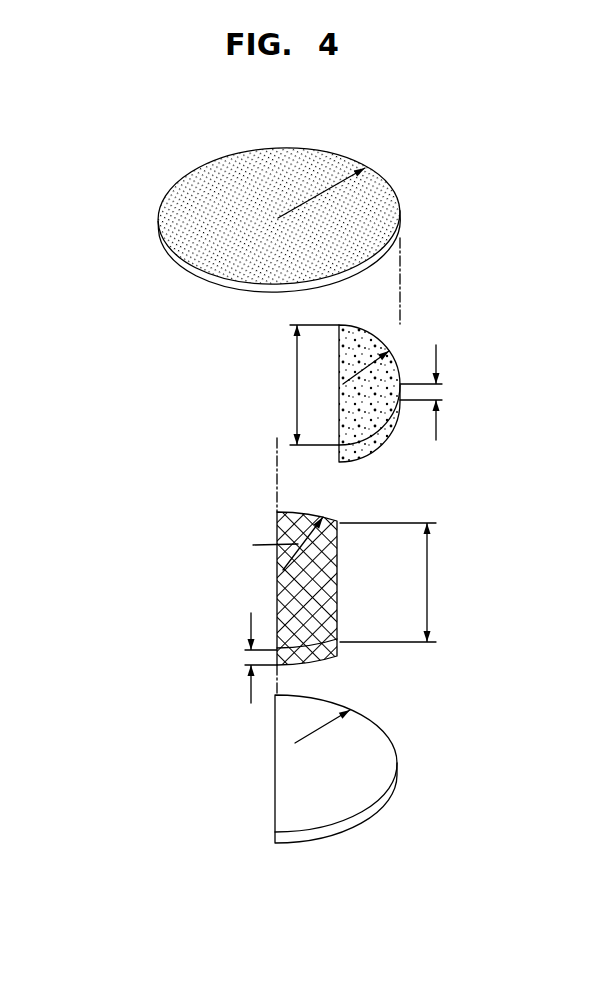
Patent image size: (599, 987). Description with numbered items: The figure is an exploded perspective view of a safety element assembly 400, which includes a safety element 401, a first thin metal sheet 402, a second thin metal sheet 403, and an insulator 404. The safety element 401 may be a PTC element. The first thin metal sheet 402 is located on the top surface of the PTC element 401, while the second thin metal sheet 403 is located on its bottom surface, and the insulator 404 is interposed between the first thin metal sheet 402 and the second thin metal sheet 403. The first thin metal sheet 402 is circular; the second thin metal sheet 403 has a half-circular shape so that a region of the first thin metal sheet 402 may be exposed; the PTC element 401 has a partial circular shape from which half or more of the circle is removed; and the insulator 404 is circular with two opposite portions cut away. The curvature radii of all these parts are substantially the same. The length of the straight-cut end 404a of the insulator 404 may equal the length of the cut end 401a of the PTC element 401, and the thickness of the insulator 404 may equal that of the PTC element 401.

The safety element assembly 400 is at (121, 163).
The safety element 401 is at (370, 401).
The cut end of the PTC element 401a is at (338, 418).
The first thin metal sheet 402 is at (392, 212).
The second thin metal sheet 403 is at (388, 765).
The insulator 404 is at (308, 607).
The straight-cut end of the insulator 404a is at (338, 587).